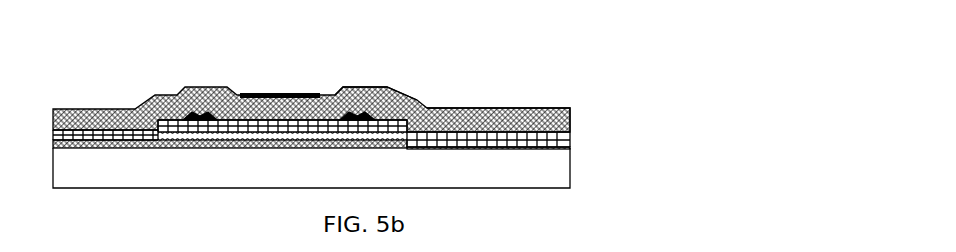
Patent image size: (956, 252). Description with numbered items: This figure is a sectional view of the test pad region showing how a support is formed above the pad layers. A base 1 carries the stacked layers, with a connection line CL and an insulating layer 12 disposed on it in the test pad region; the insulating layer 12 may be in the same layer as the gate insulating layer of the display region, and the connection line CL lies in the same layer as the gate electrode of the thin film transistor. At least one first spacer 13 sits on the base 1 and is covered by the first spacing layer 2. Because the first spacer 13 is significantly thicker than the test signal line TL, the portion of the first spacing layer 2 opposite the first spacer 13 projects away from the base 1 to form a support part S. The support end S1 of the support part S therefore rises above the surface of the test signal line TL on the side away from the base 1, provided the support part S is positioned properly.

The base 1 is at (572, 177).
The conductive layer CL is at (510, 148).
The insulating layer 12 is at (572, 133).
The first spacer 13 is at (393, 99).
The test signal line TL is at (290, 93).
The support part S is at (372, 92).
The support end S1 is at (357, 84).
The first spacing layer 2 is at (552, 108).